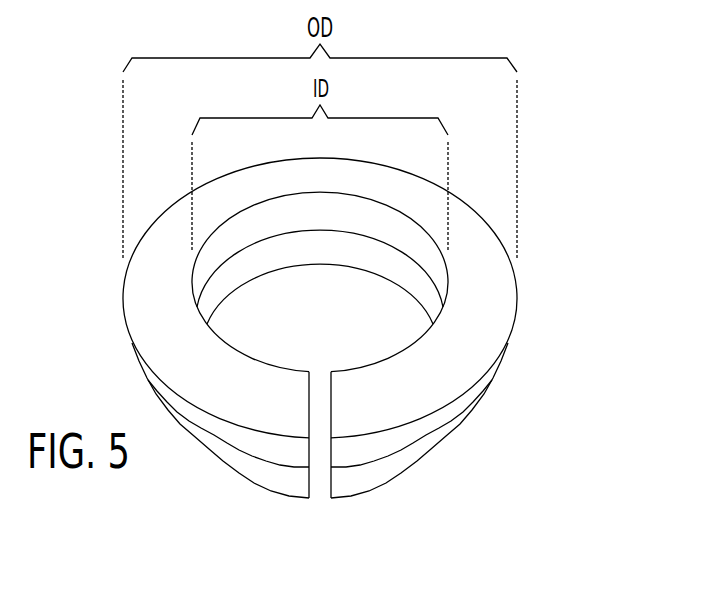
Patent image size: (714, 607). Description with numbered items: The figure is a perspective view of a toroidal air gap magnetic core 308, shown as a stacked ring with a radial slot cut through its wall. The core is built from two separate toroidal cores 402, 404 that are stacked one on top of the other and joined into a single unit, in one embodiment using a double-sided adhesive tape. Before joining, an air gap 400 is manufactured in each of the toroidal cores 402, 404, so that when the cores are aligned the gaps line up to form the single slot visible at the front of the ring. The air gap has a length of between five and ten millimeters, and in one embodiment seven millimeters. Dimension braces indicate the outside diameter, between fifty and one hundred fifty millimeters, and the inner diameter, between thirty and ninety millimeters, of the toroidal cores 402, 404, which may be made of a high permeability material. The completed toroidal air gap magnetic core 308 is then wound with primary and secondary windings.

The toroidal air gap magnetic core 308 is at (399, 366).
The air gap 400 is at (335, 503).
The toroidal core 402 is at (445, 383).
The toroidal core 404 is at (365, 483).